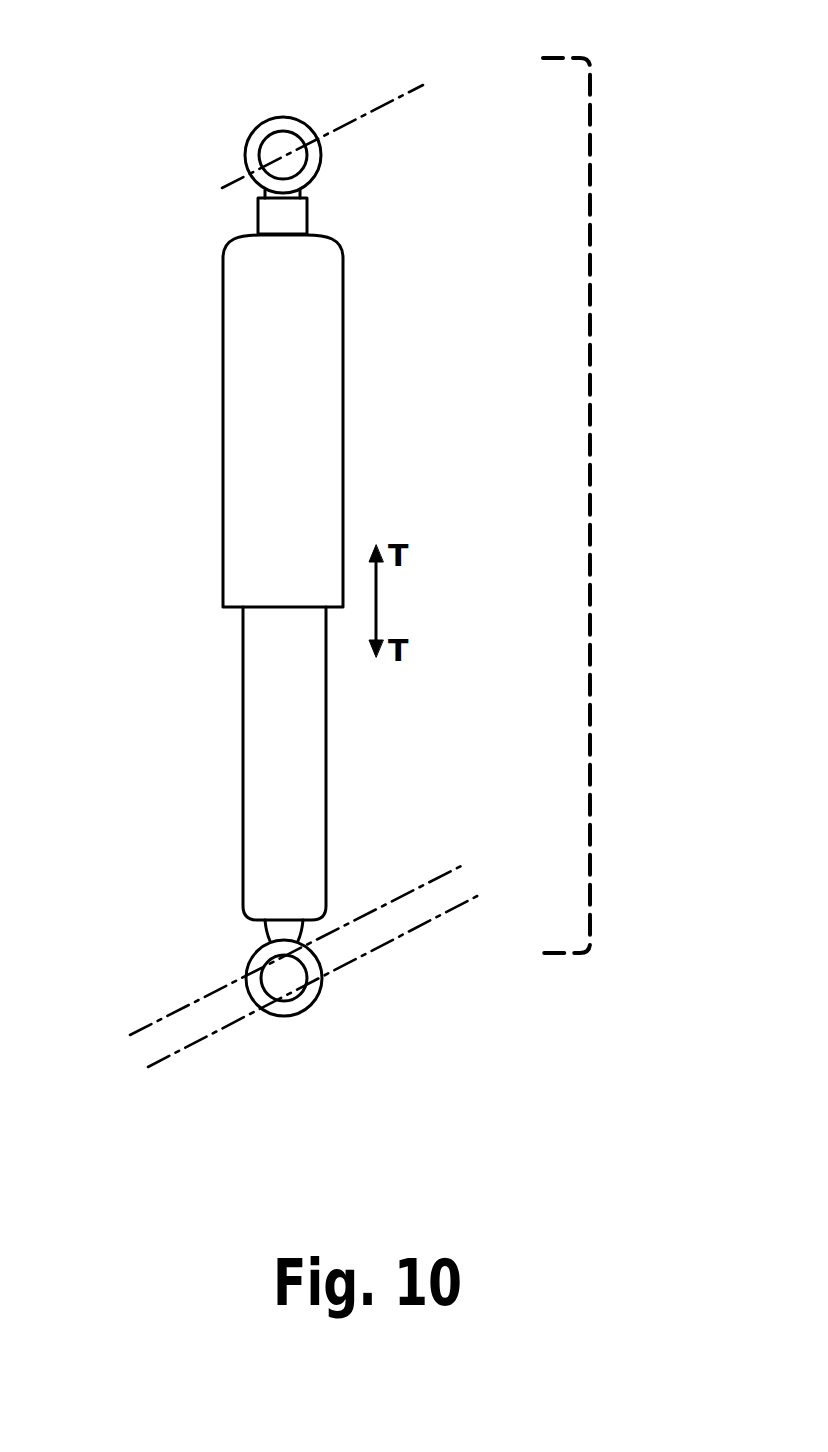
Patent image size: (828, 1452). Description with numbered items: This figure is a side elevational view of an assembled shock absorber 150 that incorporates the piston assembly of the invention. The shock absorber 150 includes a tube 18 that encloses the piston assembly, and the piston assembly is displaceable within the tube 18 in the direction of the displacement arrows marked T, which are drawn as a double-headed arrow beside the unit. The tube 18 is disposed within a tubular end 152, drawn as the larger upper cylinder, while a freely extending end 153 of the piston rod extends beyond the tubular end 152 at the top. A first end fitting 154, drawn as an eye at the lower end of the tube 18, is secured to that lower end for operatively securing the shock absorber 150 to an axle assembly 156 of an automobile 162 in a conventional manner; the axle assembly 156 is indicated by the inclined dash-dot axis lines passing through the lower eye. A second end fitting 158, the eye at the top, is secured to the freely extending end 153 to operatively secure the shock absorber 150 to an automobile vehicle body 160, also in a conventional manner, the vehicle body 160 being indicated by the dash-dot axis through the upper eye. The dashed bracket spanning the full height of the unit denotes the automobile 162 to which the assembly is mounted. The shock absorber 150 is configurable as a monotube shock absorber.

The tube 18 is at (307, 768).
The shock absorber 150 is at (390, 429).
The tubular end 152 is at (302, 332).
The freely extending end 153 is at (272, 217).
The first end fitting 154 is at (260, 967).
The axle assembly 156 is at (417, 927).
The second end fitting 158 is at (312, 167).
The automobile vehicle body 160 is at (371, 110).
The automobile 162 is at (591, 455).